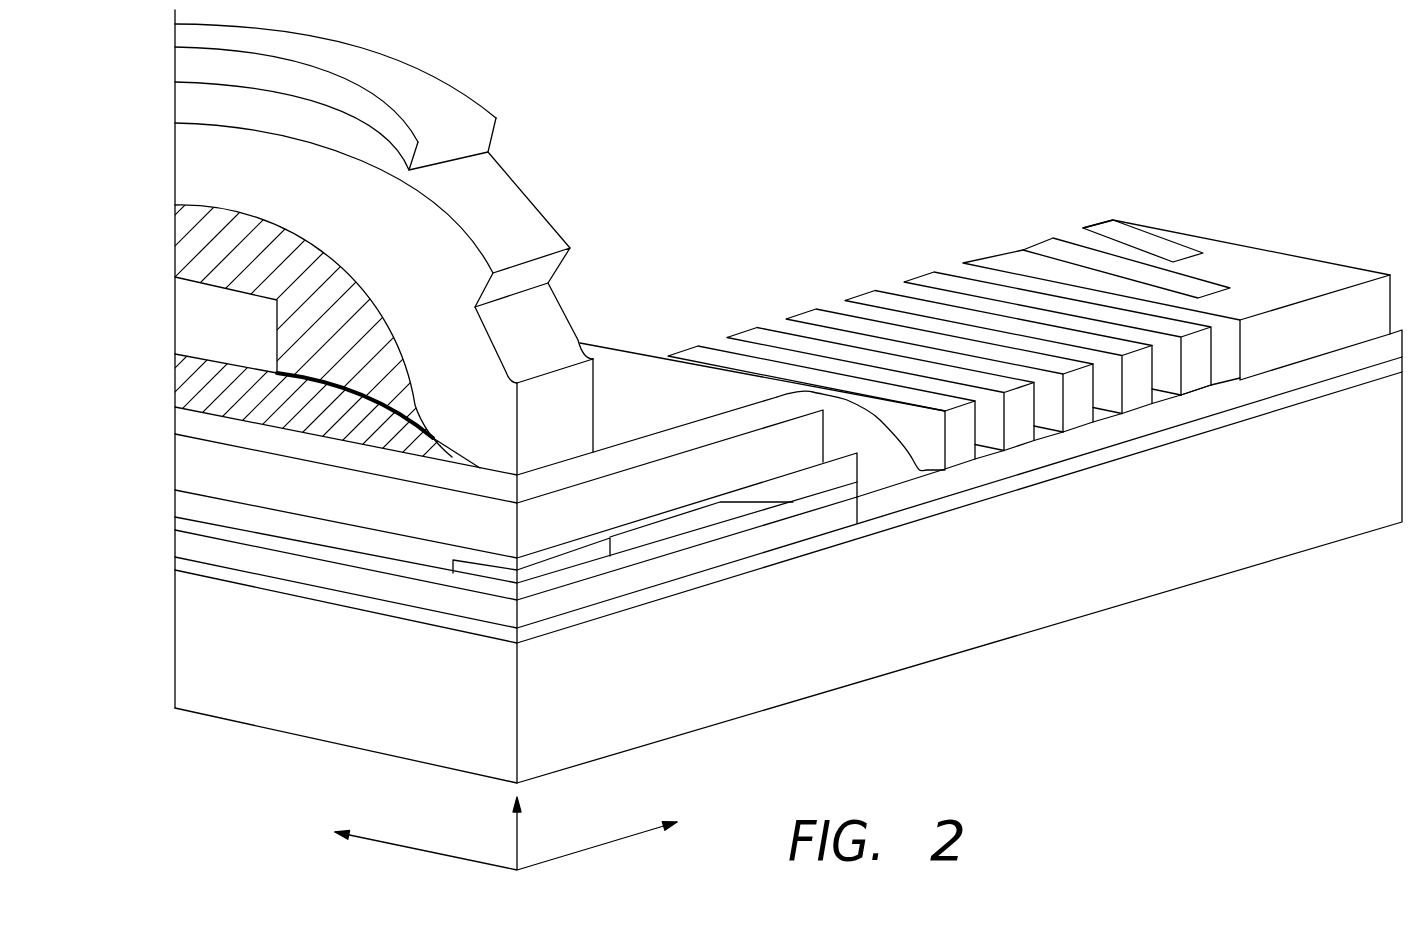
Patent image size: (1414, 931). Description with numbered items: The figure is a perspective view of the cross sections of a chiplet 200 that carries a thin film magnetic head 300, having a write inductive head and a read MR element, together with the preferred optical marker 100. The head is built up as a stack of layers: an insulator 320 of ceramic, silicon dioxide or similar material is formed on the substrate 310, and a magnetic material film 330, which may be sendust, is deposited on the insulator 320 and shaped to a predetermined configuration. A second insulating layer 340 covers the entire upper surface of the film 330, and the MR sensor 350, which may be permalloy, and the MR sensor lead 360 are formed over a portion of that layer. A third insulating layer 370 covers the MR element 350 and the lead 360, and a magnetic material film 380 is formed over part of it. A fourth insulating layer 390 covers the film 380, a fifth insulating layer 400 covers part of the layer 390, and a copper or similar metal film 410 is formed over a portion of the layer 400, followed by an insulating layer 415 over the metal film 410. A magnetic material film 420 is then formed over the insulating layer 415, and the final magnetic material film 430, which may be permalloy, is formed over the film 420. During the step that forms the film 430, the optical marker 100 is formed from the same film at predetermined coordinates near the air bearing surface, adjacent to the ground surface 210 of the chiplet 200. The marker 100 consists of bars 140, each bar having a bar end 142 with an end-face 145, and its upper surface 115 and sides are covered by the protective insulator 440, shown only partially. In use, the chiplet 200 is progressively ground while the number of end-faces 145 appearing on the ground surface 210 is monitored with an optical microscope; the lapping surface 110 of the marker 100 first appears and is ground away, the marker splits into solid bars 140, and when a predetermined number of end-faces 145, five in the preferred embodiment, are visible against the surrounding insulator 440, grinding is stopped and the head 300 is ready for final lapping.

The optical marker 100 is at (985, 383).
The lapping surface 110 is at (1362, 296).
The upper surface of the marker 115 is at (1267, 272).
The bars 140 is at (900, 417).
The bar end 142 is at (1177, 332).
The end-faces 145 is at (1197, 378).
The chiplet 200 is at (1134, 712).
The ground surface 210 is at (990, 603).
The thin film magnetic head 300 is at (590, 156).
The substrate 310 is at (182, 664).
The insulator 320 is at (182, 566).
The magnetic material film 330 is at (182, 544).
The second insulating layer 340 is at (182, 521).
The MR sensor 350 is at (557, 565).
The MR sensor lead 360 is at (662, 530).
The third insulating layer 370 is at (182, 497).
The magnetic material film 380 is at (182, 453).
The fourth insulating layer 390 is at (182, 414).
The fifth insulating layer 400 is at (182, 376).
The metal film 410 is at (182, 318).
The insulating layer 415 is at (182, 239).
The magnetic material film 420 is at (182, 161).
The final magnetic material film 430 is at (182, 98).
The protective insulator 440 is at (182, 58).